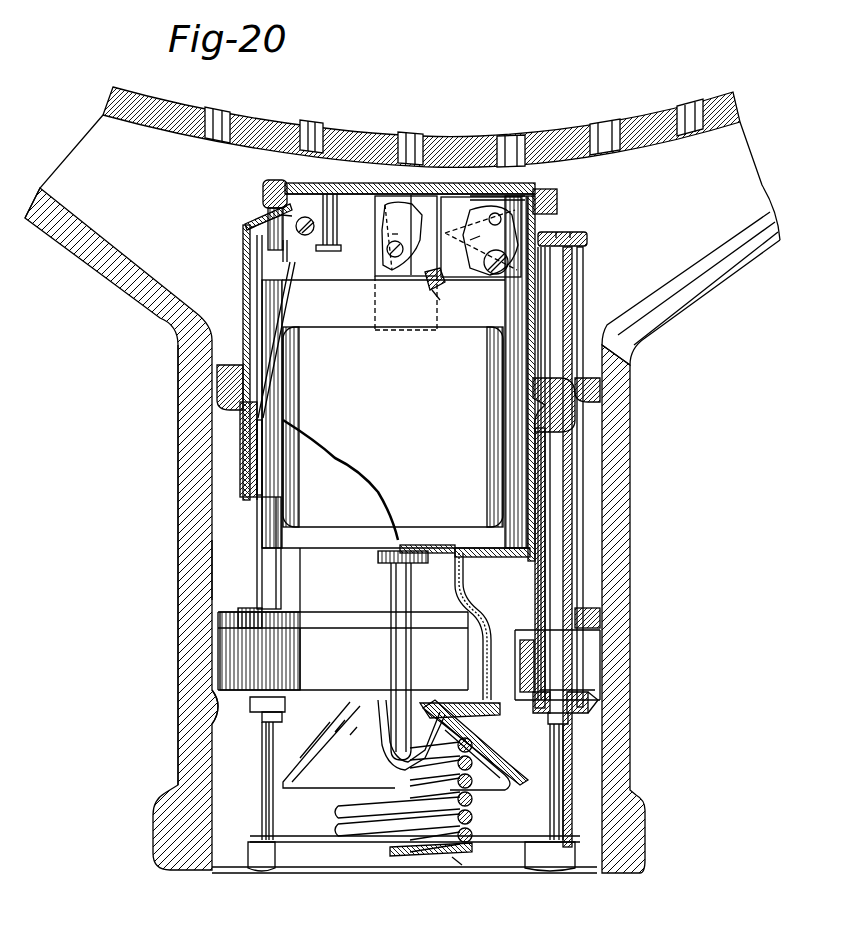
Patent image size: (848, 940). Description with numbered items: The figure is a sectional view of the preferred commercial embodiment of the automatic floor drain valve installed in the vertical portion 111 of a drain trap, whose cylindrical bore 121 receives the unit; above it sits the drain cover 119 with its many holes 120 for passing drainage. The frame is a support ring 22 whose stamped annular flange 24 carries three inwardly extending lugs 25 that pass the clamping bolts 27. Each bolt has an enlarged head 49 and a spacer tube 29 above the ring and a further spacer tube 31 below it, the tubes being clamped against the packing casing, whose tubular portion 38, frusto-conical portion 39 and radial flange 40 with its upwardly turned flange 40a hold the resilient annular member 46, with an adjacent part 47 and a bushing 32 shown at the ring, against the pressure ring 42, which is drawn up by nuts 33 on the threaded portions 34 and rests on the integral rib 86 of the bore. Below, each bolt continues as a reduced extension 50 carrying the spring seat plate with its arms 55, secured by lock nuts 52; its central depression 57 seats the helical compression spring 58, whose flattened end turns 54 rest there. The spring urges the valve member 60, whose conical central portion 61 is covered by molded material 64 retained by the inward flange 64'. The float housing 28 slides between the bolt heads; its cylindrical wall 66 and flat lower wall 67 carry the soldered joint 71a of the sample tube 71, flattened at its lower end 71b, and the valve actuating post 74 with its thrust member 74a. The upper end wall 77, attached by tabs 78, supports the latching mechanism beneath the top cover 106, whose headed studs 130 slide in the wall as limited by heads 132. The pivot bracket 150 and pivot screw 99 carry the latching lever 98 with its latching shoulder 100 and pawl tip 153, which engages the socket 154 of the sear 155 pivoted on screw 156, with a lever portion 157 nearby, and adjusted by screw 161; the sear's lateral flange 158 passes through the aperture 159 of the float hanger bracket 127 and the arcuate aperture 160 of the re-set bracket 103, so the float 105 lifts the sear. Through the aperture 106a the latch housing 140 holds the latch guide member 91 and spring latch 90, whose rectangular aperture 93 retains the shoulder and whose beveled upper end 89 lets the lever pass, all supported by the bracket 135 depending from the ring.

The drain cover 119 is at (733, 98).
The holes 120 is at (215, 128).
The re-set bracket 103 is at (413, 180).
The top cover 106 is at (266, 182).
The latching lever 98 is at (312, 186).
The pivot bracket 150 is at (270, 198).
The pivot screw 99 is at (283, 211).
The upper end of spring latch 89 is at (250, 229).
The sear 155 is at (498, 188).
The tabs 78 is at (546, 200).
The socket 154 is at (540, 225).
The bolt heads 49 is at (588, 240).
The screw 156 is at (505, 262).
The spacer tube 29 is at (583, 289).
The cylindrical outer wall 66 is at (536, 311).
The float housing 28 is at (549, 355).
The latch housing 140 is at (244, 287).
The rectangular aperture 93 is at (286, 262).
The latch guide member 91 is at (290, 275).
The spring latch 90 is at (290, 295).
The latching shoulder 100 is at (300, 238).
The stud heads 132 is at (332, 256).
The headed studs 130 is at (385, 222).
The arcuate aperture 160 is at (395, 234).
The laterally turned flange 158 is at (386, 248).
The end wall 77 is at (406, 236).
The lever 157 is at (481, 237).
The pawl tip 153 is at (478, 243).
The aperture 159 is at (428, 283).
The adjustment screw 161 is at (436, 298).
The float hanger bracket 127 is at (380, 306).
The aperture 106a is at (298, 272).
The float 105 is at (388, 498).
The support ring 22 is at (200, 384).
The supporting bracket 135 is at (244, 448).
The vertical portion of drain trap 111 is at (178, 485).
The spacer tube 31 is at (262, 527).
The cylindrical bore 121 is at (212, 557).
The upwardly turned cylindrical flange 40a is at (243, 592).
The resilient annular member 46 is at (222, 633).
The housing wall 47 is at (222, 660).
The threaded nuts 33 is at (265, 698).
The inwardly extending integral rib 86 is at (210, 712).
The threaded portion 34 is at (268, 724).
The valve member 60 is at (286, 761).
The cylindrical extension 50 is at (262, 800).
The helical compression spring 58 is at (336, 806).
The radially extending arms 55 is at (284, 838).
The lock nuts 52 is at (262, 856).
The clamping bolts 27 is at (265, 872).
The lower wall 67 is at (306, 552).
The annular thrust member 74a is at (385, 552).
The valve actuating post 74 is at (385, 601).
The soldered joint 71a is at (458, 552).
The sample tube 71 is at (453, 592).
The conical central portion 61 is at (425, 708).
The valve covering material 64 is at (484, 742).
The inwardly extending lower flange 64' is at (486, 764).
The flattened end turns 54 is at (442, 858).
The stamped cylindrical depression 57 is at (462, 858).
The flattened lower end 71b is at (472, 715).
The tubular portion 38 is at (536, 666).
The frusto-conical portion 39 is at (548, 655).
The radial flange 40 is at (567, 682).
The pressure ring 42 is at (600, 697).
The bushing 32 is at (590, 402).
The annular flange 24 is at (598, 380).
The inwardly extending lugs 25 is at (548, 440).